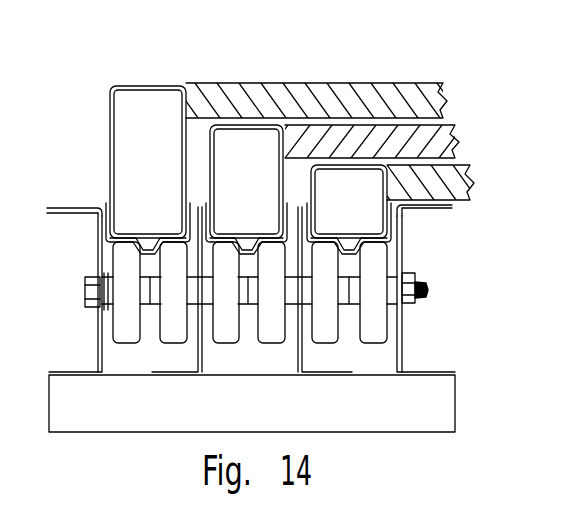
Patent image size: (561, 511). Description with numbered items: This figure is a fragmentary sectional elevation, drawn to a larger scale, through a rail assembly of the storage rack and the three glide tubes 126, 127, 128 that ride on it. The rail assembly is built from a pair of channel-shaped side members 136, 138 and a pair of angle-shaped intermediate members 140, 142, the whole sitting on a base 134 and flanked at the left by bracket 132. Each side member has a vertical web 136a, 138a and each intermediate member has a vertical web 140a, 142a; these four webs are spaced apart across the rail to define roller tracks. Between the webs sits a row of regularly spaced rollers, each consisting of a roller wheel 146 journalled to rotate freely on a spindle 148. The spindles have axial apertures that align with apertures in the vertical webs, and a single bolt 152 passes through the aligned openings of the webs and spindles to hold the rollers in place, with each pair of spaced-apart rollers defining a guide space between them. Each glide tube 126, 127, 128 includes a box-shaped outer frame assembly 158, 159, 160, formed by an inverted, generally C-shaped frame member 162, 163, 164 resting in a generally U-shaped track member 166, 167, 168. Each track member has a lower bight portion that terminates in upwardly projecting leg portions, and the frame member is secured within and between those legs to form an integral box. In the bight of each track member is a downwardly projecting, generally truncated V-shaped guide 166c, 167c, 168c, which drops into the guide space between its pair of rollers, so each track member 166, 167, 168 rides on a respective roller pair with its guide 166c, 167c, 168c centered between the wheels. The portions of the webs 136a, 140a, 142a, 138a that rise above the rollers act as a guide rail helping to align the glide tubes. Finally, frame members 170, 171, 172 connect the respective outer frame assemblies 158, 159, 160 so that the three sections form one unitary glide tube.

The glide tube 126 is at (144, 131).
The glide tube 127 is at (257, 131).
The glide tube 128 is at (356, 128).
The left mounting bracket 132 is at (59, 254).
The base plate 134 is at (457, 400).
The side member 136 is at (97, 228).
The vertical web 136a is at (97, 248).
The side member 138 is at (442, 288).
The vertical web 138a is at (402, 231).
The intermediate member 140 is at (196, 317).
The vertical web 140a is at (200, 346).
The intermediate member 142 is at (223, 334).
The vertical web 142a is at (303, 346).
The roller wheel 146 is at (100, 327).
The spindle 148 is at (108, 322).
The bolt 152 is at (84, 293).
The outer frame assembly 158 is at (168, 83).
The outer frame assembly 159 is at (262, 124).
The outer frame assembly 160 is at (368, 165).
The frame member 162 is at (137, 82).
The frame member 163 is at (228, 126).
The frame member 164 is at (332, 165).
The track member 166 is at (131, 203).
The guide 166c is at (145, 243).
The track member 167 is at (246, 207).
The guide 167c is at (247, 247).
The track member 168 is at (349, 213).
The guide 168c is at (347, 248).
The frame member 170 is at (436, 100).
The frame member 171 is at (446, 143).
The frame member 172 is at (462, 185).